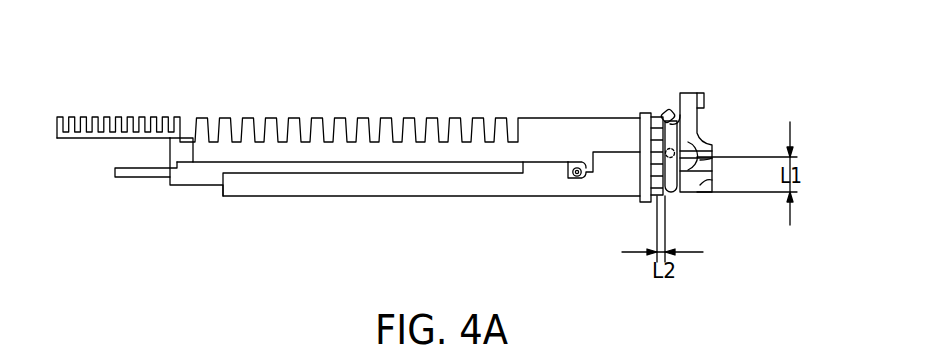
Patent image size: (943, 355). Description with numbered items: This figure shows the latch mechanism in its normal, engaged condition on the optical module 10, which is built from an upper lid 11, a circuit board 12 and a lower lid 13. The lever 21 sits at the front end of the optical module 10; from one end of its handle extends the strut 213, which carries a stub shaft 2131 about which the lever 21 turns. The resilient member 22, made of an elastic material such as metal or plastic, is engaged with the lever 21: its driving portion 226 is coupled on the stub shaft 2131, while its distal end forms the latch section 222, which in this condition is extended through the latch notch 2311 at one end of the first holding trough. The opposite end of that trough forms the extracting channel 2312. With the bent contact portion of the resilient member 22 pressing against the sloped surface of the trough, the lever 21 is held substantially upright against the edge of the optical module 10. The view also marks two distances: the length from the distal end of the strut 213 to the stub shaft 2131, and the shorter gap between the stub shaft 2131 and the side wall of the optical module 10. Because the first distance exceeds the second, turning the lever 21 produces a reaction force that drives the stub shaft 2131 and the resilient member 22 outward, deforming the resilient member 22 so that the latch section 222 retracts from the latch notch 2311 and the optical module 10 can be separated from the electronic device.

The optical module 10 is at (372, 82).
The upper lid 11 is at (543, 117).
The circuit board 12 is at (140, 178).
The lower lid 13 is at (485, 188).
The lever 21 is at (694, 82).
The resilient member 22 is at (665, 104).
The strut 213 is at (675, 192).
The latch section 222 is at (575, 178).
The driving portion 226 is at (713, 162).
The stub shaft 2131 is at (665, 148).
The latch notch 2311 is at (582, 186).
The extracting channel 2312 is at (713, 177).